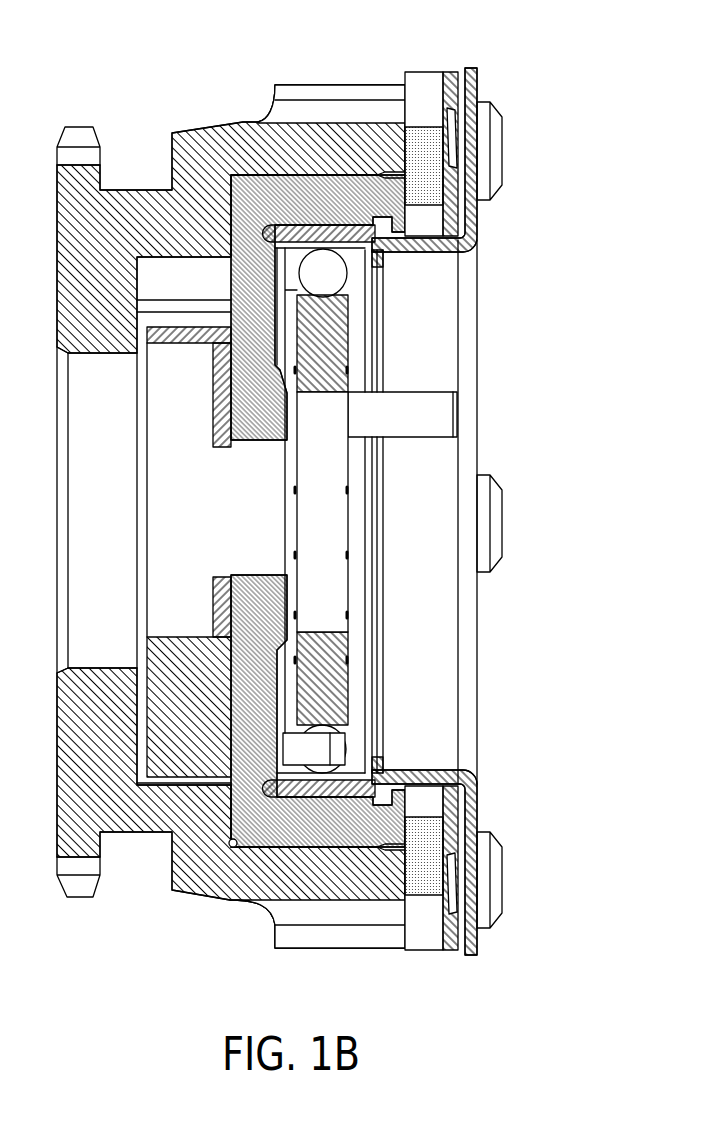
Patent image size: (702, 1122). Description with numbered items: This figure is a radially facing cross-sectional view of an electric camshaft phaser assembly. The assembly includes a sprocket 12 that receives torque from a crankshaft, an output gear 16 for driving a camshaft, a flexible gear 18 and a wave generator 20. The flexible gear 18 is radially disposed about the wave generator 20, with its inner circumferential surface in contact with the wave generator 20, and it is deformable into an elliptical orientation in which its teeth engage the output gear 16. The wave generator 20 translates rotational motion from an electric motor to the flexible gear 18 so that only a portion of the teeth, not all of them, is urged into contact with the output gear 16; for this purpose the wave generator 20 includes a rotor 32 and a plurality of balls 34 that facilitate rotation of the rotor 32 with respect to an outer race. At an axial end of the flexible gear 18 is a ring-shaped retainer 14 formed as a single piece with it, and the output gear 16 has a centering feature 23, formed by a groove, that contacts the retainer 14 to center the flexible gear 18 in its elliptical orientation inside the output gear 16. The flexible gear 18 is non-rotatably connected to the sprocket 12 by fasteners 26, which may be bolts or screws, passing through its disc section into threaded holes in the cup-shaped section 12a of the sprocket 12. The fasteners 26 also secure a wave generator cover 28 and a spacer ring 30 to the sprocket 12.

The sprocket 12 is at (142, 168).
The cup-shaped section 12a is at (370, 140).
The retainer 14 is at (284, 806).
The output gear 16 is at (285, 188).
The flexible gear 18 is at (453, 83).
The wave generator 20 is at (350, 483).
The centering feature 23 is at (253, 817).
The fasteners 26 is at (480, 153).
The wave generator cover 28 is at (472, 67).
The spacer ring 30 is at (425, 147).
The rotor 32 is at (347, 345).
The balls 34 is at (330, 277).